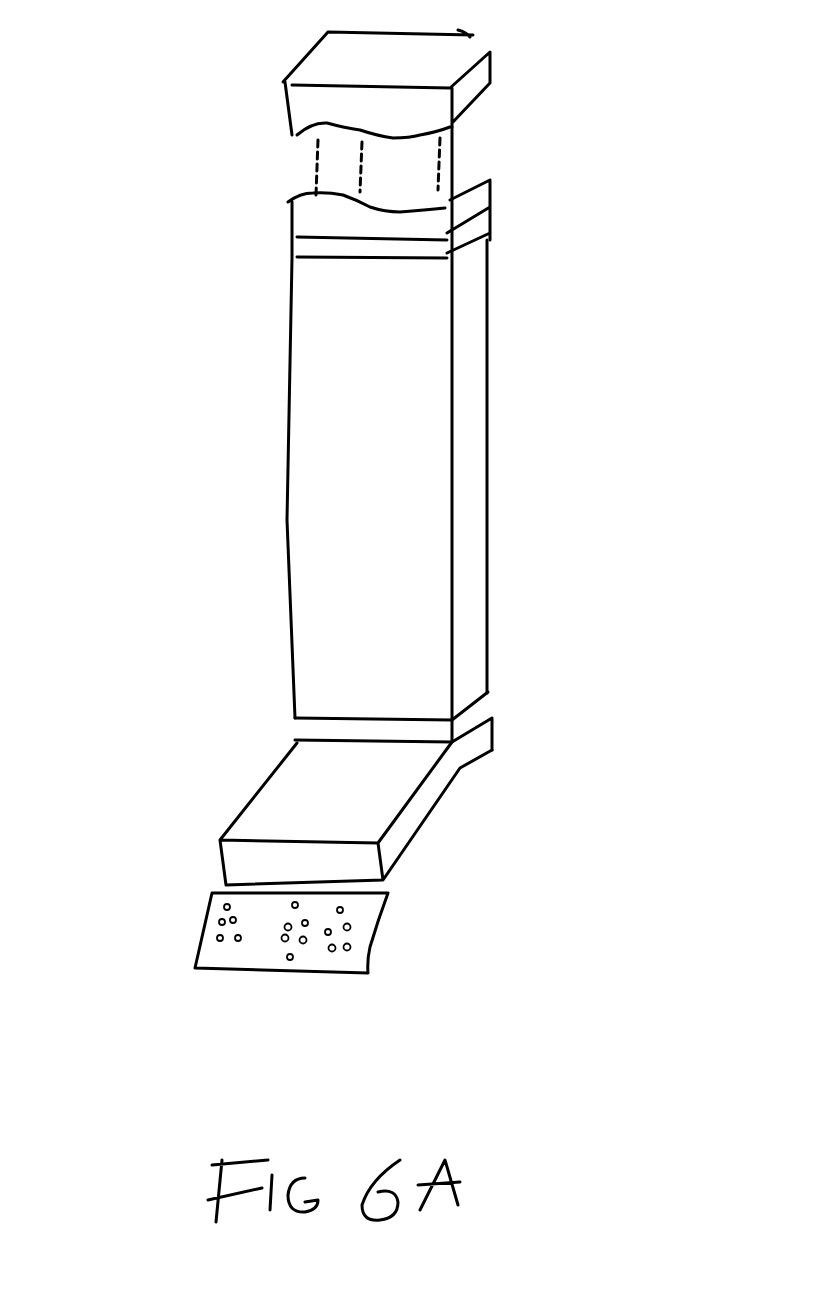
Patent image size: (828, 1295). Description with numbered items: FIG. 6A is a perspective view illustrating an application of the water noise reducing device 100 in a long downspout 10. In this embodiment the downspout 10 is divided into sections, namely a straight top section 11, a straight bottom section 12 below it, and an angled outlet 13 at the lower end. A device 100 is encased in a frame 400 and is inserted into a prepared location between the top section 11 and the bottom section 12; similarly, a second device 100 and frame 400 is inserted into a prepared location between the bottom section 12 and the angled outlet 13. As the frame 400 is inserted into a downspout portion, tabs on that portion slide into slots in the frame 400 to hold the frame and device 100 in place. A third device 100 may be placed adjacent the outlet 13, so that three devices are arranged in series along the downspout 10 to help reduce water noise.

The downspout 10 is at (203, 350).
The straight top section 11 is at (490, 73).
The straight bottom section 12 is at (487, 448).
The angled outlet 13 is at (440, 812).
The water noise reducing device 100 is at (368, 973).
The frame 400 is at (490, 230).